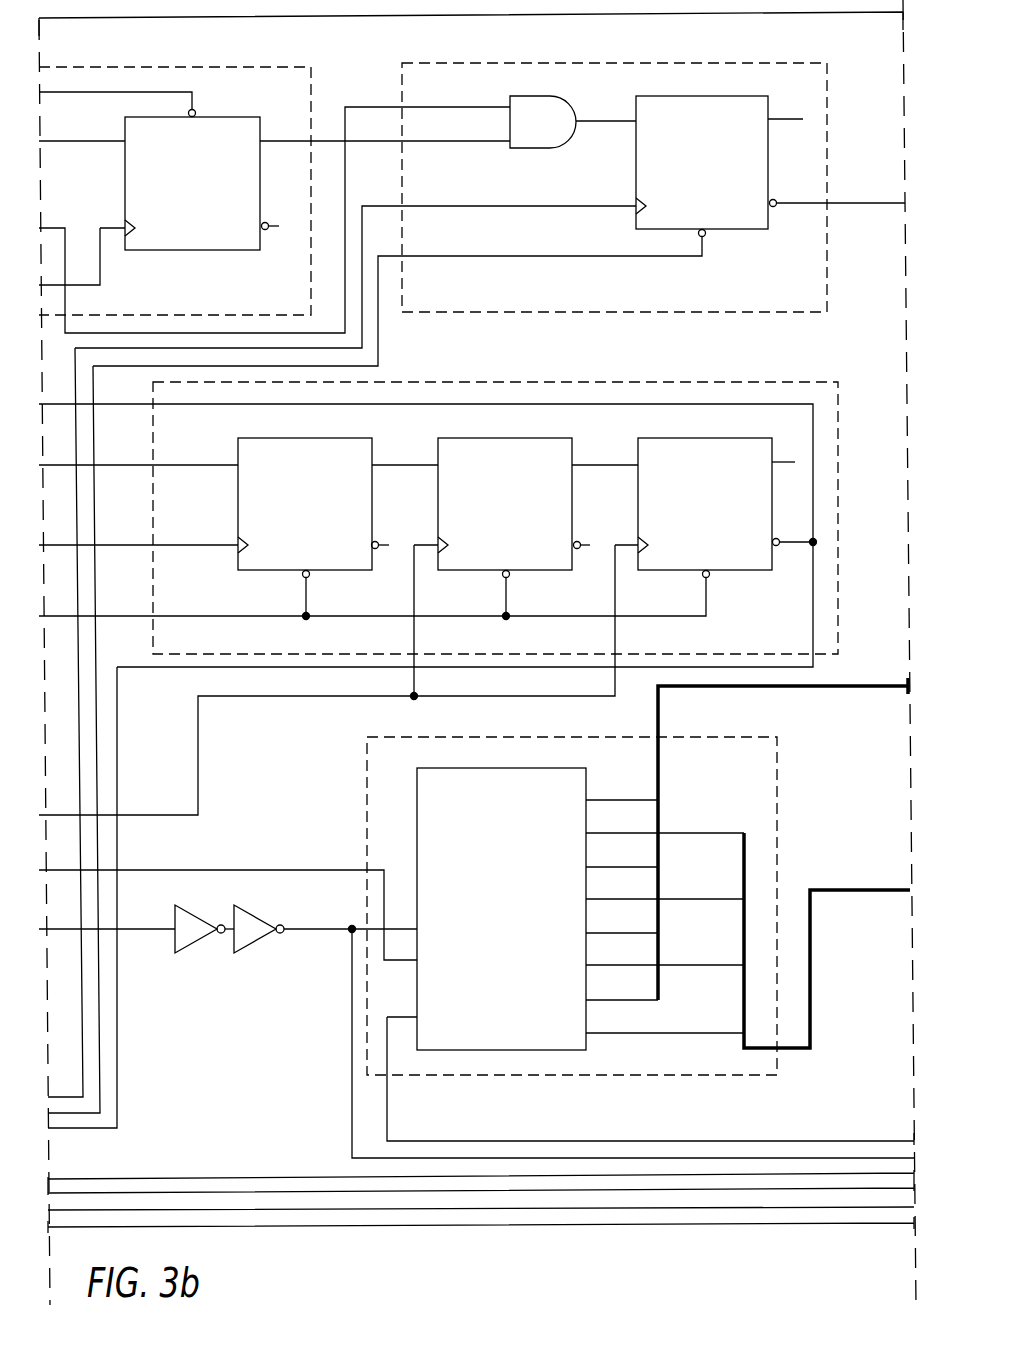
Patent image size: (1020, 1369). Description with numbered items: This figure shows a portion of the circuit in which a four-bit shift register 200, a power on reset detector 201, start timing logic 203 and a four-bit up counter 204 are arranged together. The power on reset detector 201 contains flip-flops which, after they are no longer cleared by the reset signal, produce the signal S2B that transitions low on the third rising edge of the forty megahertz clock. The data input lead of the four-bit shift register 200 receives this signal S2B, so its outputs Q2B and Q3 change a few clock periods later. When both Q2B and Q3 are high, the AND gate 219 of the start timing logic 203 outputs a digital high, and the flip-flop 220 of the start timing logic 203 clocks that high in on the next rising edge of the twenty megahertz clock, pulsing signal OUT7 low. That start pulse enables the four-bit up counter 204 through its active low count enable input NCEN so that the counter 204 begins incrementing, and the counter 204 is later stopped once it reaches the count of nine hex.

The 4-bit shift register 200 is at (311, 82).
The start timing logic 203 is at (490, 200).
The AND gate 219 is at (512, 150).
The flip-flop 220 is at (636, 176).
The power on reset detector 201 is at (680, 380).
The 4-bit up counter 204 is at (777, 1075).